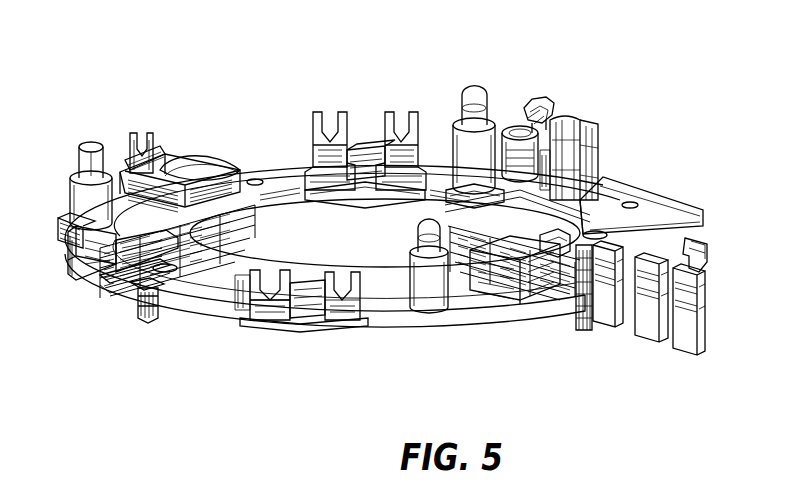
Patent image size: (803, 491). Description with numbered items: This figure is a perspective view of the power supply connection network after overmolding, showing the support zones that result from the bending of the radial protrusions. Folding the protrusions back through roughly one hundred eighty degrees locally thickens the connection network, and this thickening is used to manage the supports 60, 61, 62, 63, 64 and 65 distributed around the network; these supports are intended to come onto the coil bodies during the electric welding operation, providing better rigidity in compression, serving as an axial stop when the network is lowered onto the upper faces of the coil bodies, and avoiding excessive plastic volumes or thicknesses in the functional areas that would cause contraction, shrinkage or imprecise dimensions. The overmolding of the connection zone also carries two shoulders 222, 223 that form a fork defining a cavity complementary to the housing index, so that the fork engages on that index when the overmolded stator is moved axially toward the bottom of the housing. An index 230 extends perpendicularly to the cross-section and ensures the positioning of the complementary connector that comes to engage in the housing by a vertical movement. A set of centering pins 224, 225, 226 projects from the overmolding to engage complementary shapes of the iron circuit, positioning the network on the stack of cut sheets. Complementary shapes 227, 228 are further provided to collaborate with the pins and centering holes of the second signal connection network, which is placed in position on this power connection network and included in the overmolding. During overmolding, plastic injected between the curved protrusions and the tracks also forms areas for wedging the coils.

The support 60 is at (366, 163).
The support 61 is at (222, 164).
The support 62 is at (127, 287).
The support 63 is at (228, 310).
The support 64 is at (522, 308).
The support 65 is at (600, 167).
The shoulder 222 is at (556, 110).
The shoulder 223 is at (583, 118).
The centering pin 224 is at (494, 118).
The centering pin 225 is at (442, 310).
The centering pin 226 is at (82, 150).
The complementary shape 227 is at (552, 116).
The complementary shape 228 is at (150, 300).
The index 230 is at (590, 327).